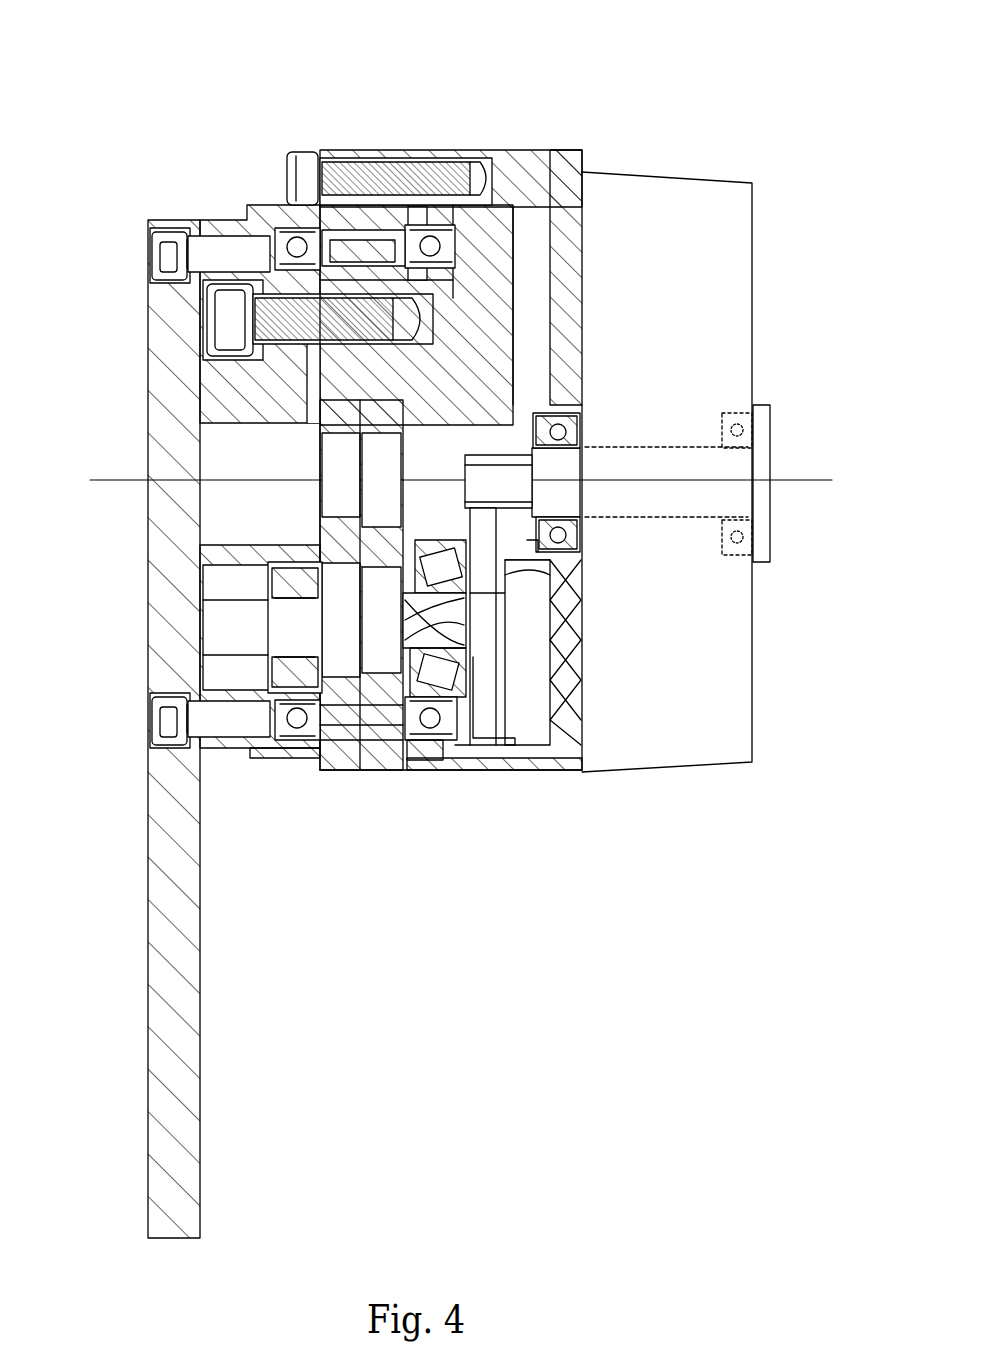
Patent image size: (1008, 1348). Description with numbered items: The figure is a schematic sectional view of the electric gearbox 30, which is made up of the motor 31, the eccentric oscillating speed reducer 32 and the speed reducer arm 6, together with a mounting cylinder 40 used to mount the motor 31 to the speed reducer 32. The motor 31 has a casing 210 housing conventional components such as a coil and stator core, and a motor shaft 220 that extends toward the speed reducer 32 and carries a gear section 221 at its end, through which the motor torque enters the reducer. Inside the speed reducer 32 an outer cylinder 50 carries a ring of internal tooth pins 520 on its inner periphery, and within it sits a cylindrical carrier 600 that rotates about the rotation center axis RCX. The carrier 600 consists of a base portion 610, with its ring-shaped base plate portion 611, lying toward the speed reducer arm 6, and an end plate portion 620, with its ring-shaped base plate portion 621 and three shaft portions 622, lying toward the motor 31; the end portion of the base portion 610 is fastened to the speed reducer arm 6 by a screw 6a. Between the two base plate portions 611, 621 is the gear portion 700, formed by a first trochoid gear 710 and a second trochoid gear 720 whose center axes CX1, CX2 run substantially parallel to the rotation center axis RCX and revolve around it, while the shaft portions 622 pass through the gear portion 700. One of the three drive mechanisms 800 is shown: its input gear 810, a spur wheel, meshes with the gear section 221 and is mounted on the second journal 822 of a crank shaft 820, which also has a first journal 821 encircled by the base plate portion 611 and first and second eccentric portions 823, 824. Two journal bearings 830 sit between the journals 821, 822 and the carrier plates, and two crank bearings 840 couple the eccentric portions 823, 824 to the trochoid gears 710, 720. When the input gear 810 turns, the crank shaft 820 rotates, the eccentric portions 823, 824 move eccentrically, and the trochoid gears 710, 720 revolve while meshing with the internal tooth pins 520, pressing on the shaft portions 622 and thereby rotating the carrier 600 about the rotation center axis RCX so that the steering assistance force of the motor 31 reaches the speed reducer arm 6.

The electric gearbox 30 is at (152, 72).
The motor 31 is at (758, 282).
The speed reducer 32 is at (437, 142).
The speed reducer arm 6 is at (162, 398).
The screw 6a is at (152, 262).
The mounting cylinder 40 is at (488, 772).
The outer cylinder 50 is at (365, 772).
The casing 210 is at (684, 183).
The motor shaft 220 is at (648, 465).
The gear section 221 is at (582, 535).
The internal tooth pins 520 is at (322, 78).
The carrier 600 is at (525, 255).
The base portion 610 is at (226, 212).
The base plate portion 611 is at (205, 346).
The end plate portion 620 is at (535, 297).
The base plate portion 621 is at (478, 205).
The shaft portions 622 is at (312, 152).
The gear portion 700 is at (470, 772).
The first trochoid gear 710 is at (330, 752).
The second trochoid gear 720 is at (440, 772).
The drive mechanism 800 is at (515, 705).
The input gear 810 is at (552, 560).
The crank shaft 820 is at (552, 640).
The first journal 821 is at (285, 625).
The second journal 822 is at (518, 627).
The first eccentric portion 823 is at (282, 600).
The second eccentric portion 824 is at (552, 590).
The journal bearings 830 is at (518, 678).
The crank bearings 840 is at (282, 642).
The center axis CX1 is at (318, 462).
The center axis CX2 is at (360, 505).
The rotation center axis RCX is at (812, 480).